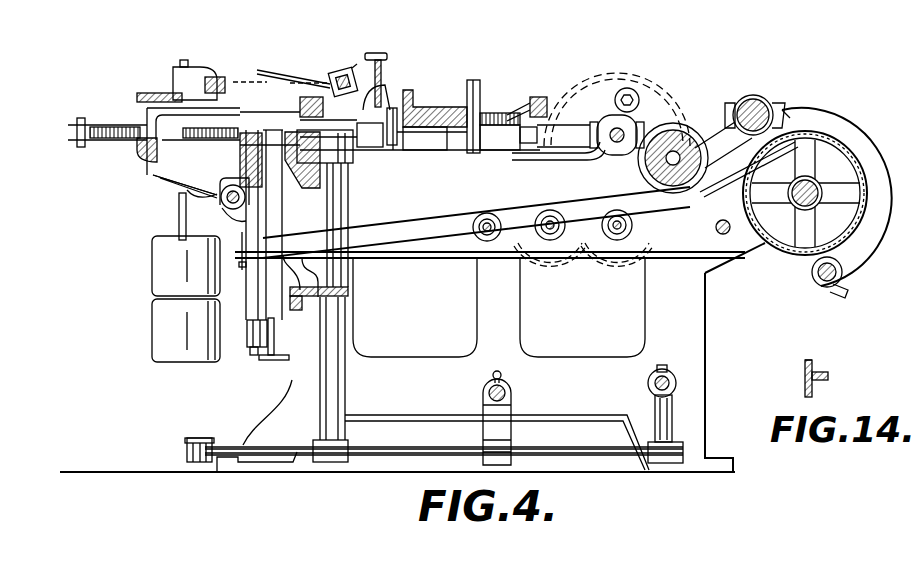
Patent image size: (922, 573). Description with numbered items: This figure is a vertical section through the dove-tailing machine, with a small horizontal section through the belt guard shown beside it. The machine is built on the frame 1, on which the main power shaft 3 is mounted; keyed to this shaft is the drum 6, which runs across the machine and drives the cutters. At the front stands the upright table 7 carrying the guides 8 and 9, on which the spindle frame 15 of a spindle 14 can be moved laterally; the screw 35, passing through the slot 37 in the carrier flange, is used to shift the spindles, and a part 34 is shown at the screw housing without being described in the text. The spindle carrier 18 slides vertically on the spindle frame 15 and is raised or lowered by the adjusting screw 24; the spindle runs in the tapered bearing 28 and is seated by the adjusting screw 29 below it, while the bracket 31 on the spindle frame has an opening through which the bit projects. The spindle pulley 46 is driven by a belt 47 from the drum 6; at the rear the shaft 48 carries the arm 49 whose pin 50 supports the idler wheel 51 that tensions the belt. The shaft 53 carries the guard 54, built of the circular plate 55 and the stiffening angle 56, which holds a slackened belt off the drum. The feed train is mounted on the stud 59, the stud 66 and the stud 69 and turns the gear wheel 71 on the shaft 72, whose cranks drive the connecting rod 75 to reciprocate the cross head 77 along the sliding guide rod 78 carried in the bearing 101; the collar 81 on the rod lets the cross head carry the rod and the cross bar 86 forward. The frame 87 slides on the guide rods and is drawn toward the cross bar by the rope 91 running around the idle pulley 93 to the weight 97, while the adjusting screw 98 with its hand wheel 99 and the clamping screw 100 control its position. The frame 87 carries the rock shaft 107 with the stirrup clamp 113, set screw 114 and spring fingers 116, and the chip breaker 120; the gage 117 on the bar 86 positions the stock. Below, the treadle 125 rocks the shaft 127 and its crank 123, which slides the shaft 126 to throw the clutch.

In FIG. 4, the frame 1 is at (707, 312).
In FIG. 4, the main power shaft 3 is at (792, 206).
In FIG. 4, the drum 6 is at (743, 189).
In FIG. 4, the upright table 7 is at (347, 183).
In FIG. 4, the guide 8 is at (273, 153).
In FIG. 4, the guide 9 is at (292, 318).
In FIG. 4, the spindle 14 is at (897, 173).
In FIG. 4, the spindle frame 15 is at (295, 211).
In FIG. 4, the spindle carrier 18 is at (243, 218).
In FIG. 4, the adjusting screw 24 is at (278, 361).
In FIG. 4, the tapered bearing 28 is at (253, 328).
In FIG. 4, the adjusting screw 29 is at (252, 352).
In FIG. 4, the horizontal bracket or sectional table 31 is at (220, 110).
In FIG. 4, the bearing sleeve 34 is at (137, 157).
In FIG. 4, the screw 35 is at (226, 203).
In FIG. 4, the slot 37 is at (220, 178).
In FIG. 4, the pulley 46 is at (242, 265).
In FIG. 4, the belt 47 is at (413, 222).
In FIG. 4, the shaft 48 is at (755, 98).
In FIG. 4, the arm 49 is at (712, 128).
In FIG. 4, the pin 50 is at (693, 120).
In FIG. 4, the idler or belt tightening wheel 51 is at (657, 132).
In FIG. 4, the shaft 53 is at (822, 283).
In FIG. 4, the guard 54 is at (888, 231).
In FIG. 14, the guard 54 is at (812, 362).
In FIG. 14, the circular plate 55 is at (805, 378).
In FIG. 14, the circular stiffening angle 56 is at (820, 373).
In FIG. 4, the stud 59 is at (488, 225).
In FIG. 4, the stud 66 is at (550, 216).
In FIG. 4, the stud 69 is at (615, 216).
In FIG. 4, the gear wheel 71 is at (600, 57).
In FIG. 4, the shaft 72 is at (588, 130).
In FIG. 4, the connecting rod 75 is at (533, 100).
In FIG. 4, the cross head 77 is at (417, 100).
In FIG. 4, the sliding guide rod 78 is at (105, 125).
In FIG. 4, the collar 81 is at (400, 147).
In FIG. 4, the cross bar 86 is at (148, 93).
In FIG. 4, the frame 87 is at (378, 97).
In FIG. 4, the rope or chain 91 is at (182, 212).
In FIG. 4, the idle pulley 93 is at (183, 193).
In FIG. 4, the weight 97 is at (160, 338).
In FIG. 4, the adjusting screw 98 is at (396, 110).
In FIG. 4, the hand wheel 99 is at (477, 80).
In FIG. 4, the clamping screw 100 is at (383, 58).
In FIG. 4, the bearing 101 is at (498, 113).
In FIG. 4, the rock shaft 107 is at (330, 80).
In FIG. 4, the stirrup clamp or yoke 113 is at (280, 84).
In FIG. 4, the set screw 114 is at (357, 67).
In FIG. 4, the spring finger 116 is at (258, 70).
In FIG. 4, the gage 117 is at (197, 80).
In FIG. 4, the chip breaker 120 is at (300, 99).
In FIG. 4, the crank 123 is at (483, 393).
In FIG. 4, the treadle 125 is at (197, 440).
In FIG. 4, the shaft 126 is at (506, 386).
In FIG. 4, the shaft 127 is at (549, 449).